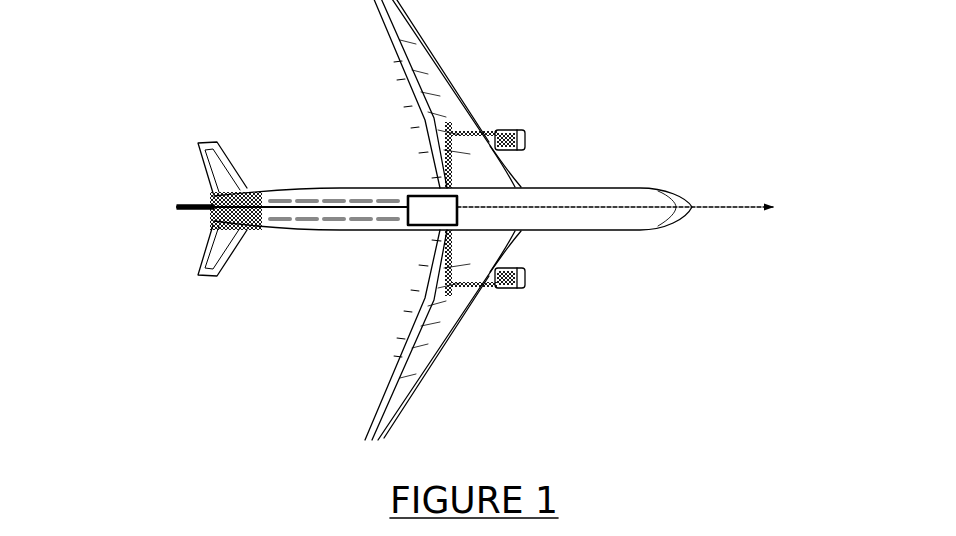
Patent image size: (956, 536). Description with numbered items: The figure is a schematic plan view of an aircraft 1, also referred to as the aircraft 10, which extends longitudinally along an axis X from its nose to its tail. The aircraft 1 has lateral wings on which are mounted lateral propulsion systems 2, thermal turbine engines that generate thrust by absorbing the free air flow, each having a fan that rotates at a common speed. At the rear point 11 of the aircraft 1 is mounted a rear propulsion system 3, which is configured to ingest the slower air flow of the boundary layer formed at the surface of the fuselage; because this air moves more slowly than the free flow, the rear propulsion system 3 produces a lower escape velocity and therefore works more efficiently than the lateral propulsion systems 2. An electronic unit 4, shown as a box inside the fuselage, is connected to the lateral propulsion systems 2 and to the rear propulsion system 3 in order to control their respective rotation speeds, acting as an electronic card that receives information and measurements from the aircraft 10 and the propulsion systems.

The aircraft 1 is at (436, 220).
The aircraft 10 is at (560, 186).
The lateral propulsion systems 2 is at (512, 129).
The rear propulsion system 3 is at (242, 200).
The electronic unit 4 is at (423, 231).
The rear point 11 is at (187, 190).